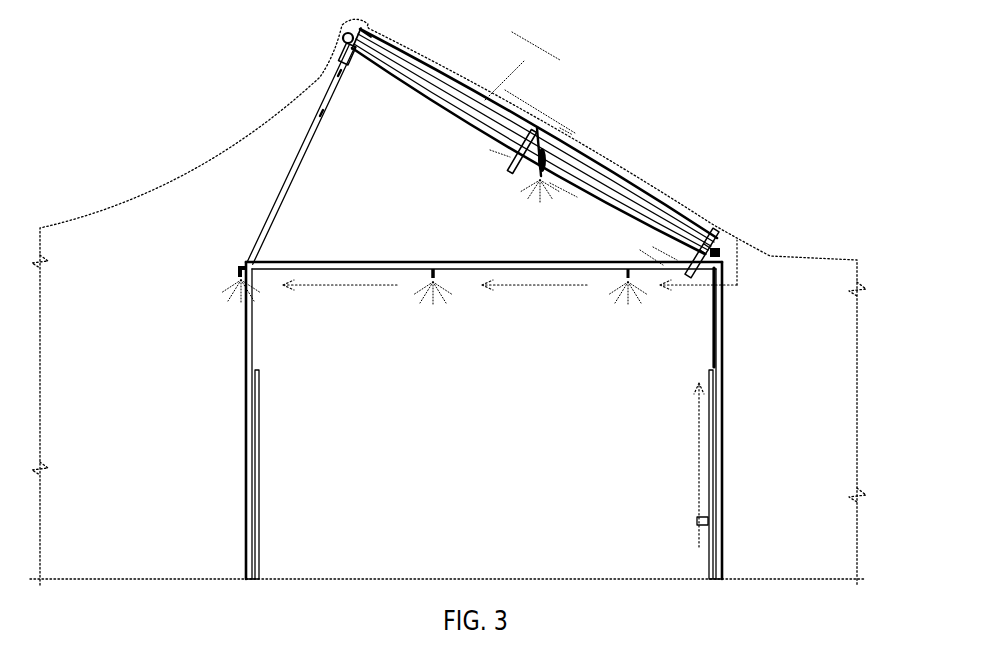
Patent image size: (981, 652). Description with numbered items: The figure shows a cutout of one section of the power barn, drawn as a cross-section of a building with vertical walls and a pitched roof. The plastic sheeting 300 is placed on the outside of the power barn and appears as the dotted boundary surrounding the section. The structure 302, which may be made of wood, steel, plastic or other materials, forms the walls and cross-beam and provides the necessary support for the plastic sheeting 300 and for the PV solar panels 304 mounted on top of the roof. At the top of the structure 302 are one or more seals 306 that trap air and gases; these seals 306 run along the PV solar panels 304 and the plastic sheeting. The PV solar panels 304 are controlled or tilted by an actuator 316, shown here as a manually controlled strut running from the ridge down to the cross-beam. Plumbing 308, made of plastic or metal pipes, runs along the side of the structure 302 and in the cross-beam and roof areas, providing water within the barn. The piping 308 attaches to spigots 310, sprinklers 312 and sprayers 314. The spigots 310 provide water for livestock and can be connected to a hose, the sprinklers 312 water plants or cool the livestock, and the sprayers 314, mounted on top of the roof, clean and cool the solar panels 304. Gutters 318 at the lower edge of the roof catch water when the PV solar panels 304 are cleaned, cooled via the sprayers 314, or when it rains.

The plastic sheeting 300 is at (128, 202).
The structure 302 is at (246, 350).
The PV solar panels 304 is at (423, 60).
The seals 306 is at (342, 36).
The plumbing 308 is at (710, 350).
The spigots 310 is at (697, 520).
The sprinklers 312 is at (512, 171).
The sprayers 314 is at (375, 34).
The actuator 316 is at (277, 197).
The gutters 318 is at (716, 245).